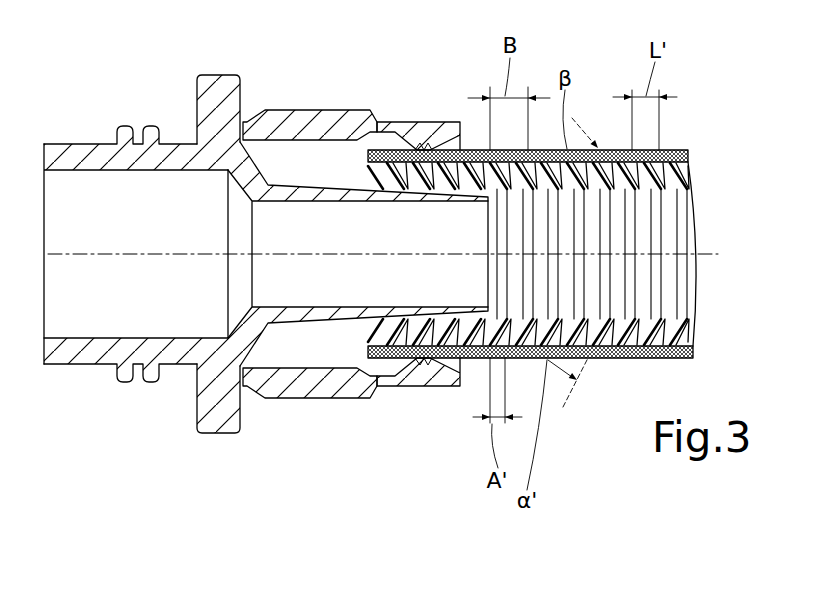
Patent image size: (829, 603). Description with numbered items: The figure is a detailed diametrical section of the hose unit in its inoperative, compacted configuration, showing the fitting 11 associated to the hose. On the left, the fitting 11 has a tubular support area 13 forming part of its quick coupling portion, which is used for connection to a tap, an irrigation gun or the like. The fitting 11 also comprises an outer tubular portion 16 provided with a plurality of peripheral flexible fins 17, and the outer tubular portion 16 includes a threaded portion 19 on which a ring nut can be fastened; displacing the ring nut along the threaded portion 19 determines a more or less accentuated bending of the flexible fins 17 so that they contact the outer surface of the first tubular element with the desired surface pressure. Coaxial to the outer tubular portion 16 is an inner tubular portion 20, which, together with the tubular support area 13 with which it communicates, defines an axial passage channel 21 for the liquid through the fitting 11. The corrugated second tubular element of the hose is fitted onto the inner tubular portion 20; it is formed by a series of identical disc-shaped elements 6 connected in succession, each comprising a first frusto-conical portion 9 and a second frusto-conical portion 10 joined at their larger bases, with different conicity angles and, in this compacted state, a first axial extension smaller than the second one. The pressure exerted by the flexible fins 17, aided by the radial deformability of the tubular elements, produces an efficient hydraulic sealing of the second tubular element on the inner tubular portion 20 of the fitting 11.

The disc-shaped element 6 is at (677, 147).
The first frusto-conical portion 9 is at (605, 362).
The second frusto-conical portion 10 is at (613, 192).
The fitting 11 is at (174, 434).
The tubular support area 13 is at (73, 143).
The outer tubular portion 16 is at (249, 124).
The flexible fins 17 is at (425, 121).
The threaded portion 19 is at (330, 109).
The inner tubular portion 20 is at (328, 318).
The axial passage channel 21 is at (177, 330).